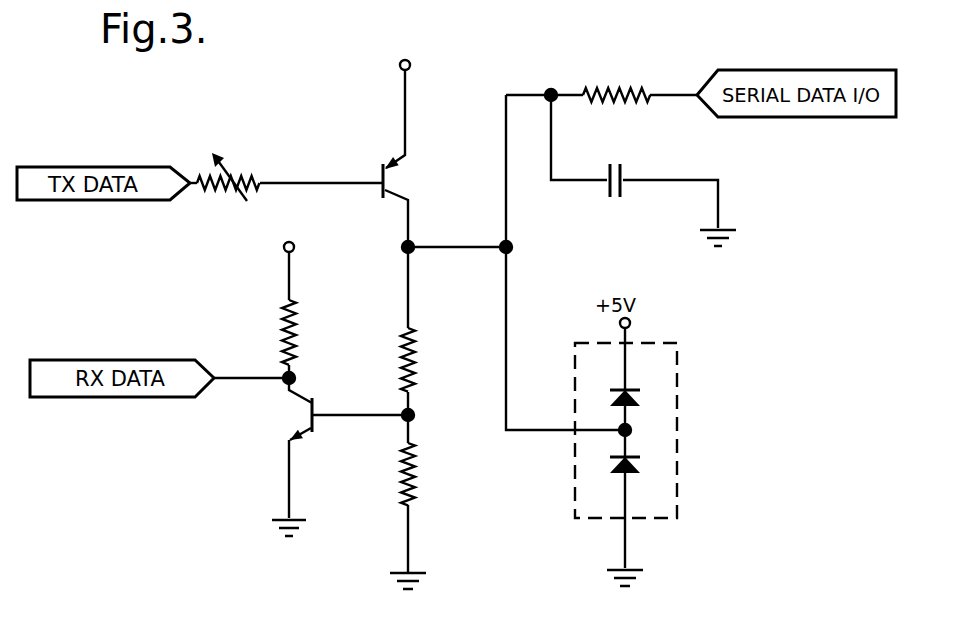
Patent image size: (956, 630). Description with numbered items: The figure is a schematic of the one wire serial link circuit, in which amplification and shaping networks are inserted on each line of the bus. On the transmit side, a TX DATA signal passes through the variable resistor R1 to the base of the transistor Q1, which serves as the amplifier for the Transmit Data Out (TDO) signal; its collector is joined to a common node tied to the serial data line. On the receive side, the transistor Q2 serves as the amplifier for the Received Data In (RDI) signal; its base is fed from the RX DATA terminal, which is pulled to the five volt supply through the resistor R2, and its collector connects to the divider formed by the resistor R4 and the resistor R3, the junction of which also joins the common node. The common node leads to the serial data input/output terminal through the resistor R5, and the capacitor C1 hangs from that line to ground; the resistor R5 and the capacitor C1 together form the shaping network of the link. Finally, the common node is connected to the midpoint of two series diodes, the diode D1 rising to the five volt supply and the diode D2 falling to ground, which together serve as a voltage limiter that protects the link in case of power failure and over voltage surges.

The resistor R1 is at (233, 161).
The resistor R2 is at (310, 295).
The resistor R3 is at (431, 493).
The resistor R4 is at (431, 331).
The resistor R5 is at (616, 98).
The capacitor C1 is at (634, 161).
The transistor Q1 is at (410, 153).
The transistor Q2 is at (329, 448).
The diode D1 is at (634, 386).
The diode D2 is at (634, 479).